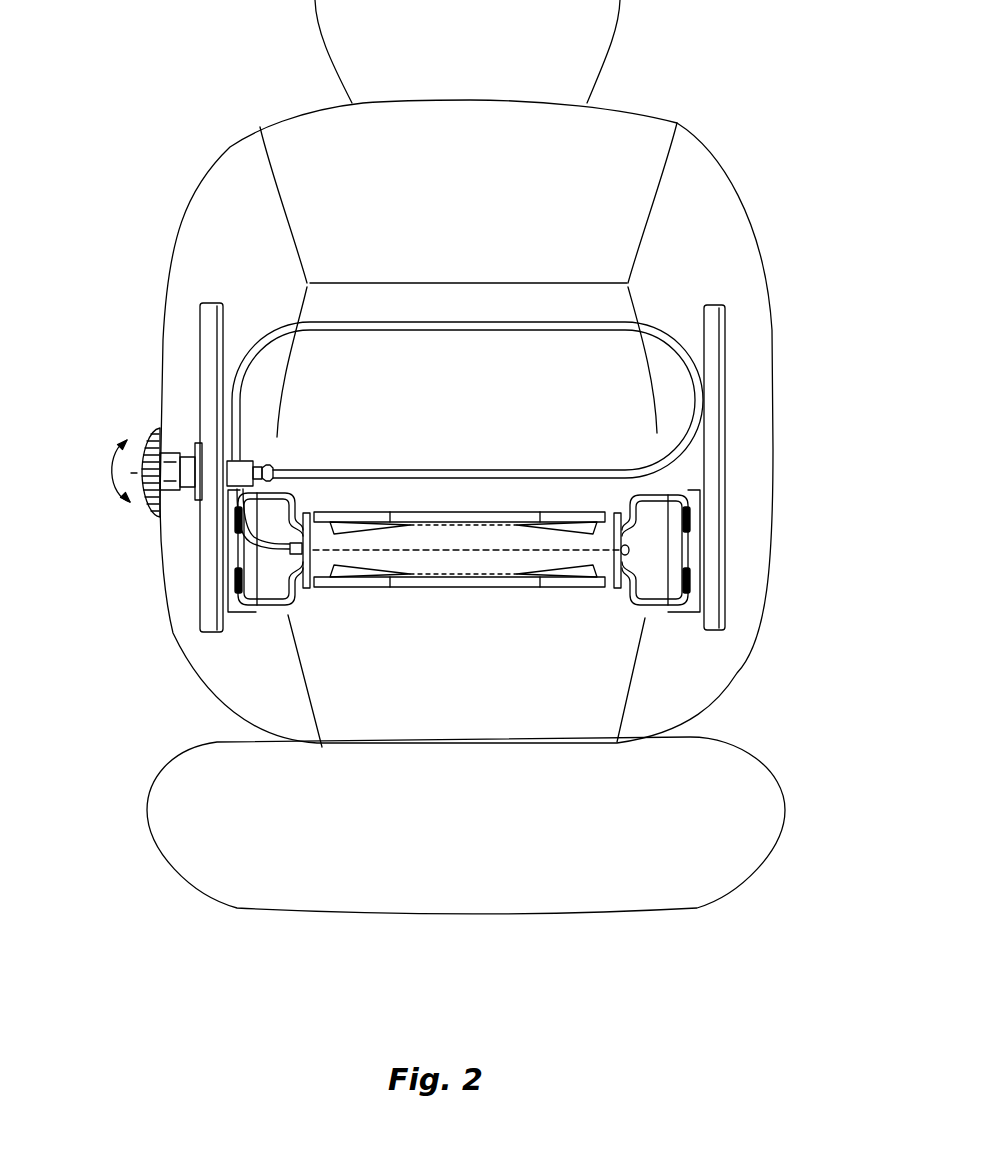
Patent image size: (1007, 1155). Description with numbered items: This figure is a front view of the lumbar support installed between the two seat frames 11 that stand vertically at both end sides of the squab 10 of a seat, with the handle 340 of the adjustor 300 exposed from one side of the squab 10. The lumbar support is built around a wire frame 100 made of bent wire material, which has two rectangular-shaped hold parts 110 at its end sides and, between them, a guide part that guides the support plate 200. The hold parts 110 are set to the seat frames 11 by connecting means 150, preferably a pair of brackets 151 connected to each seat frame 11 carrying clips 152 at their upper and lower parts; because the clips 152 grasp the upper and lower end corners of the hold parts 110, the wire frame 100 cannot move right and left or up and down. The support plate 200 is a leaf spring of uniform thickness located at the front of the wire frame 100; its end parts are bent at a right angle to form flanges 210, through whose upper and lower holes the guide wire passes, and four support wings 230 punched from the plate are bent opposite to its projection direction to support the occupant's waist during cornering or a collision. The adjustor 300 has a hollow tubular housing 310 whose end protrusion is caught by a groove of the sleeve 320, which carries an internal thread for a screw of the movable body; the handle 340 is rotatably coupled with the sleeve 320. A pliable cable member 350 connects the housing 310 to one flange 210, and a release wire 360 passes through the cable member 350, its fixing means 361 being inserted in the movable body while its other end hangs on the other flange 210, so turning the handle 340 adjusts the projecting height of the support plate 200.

The squab 10 is at (733, 210).
The seat frame 11 is at (210, 327).
The wire frame 100 is at (275, 617).
The hold part 110 is at (253, 612).
The connecting means 150 is at (692, 548).
The bracket 151 is at (687, 613).
The clip 152 is at (690, 518).
The support plate 200 is at (500, 556).
The flange 210 is at (305, 575).
The support wing 230 is at (362, 510).
The adjustor 300 is at (160, 476).
The housing 310 is at (197, 515).
The sleeve 320 is at (148, 433).
The handle 340 is at (157, 507).
The cable member 350 is at (690, 350).
The release wire 360 is at (436, 555).
The fixing means 361 is at (640, 557).